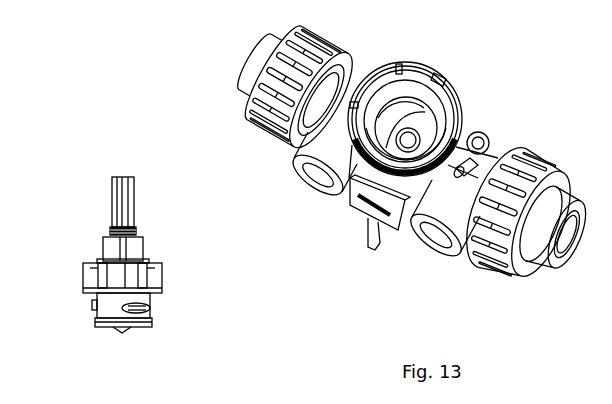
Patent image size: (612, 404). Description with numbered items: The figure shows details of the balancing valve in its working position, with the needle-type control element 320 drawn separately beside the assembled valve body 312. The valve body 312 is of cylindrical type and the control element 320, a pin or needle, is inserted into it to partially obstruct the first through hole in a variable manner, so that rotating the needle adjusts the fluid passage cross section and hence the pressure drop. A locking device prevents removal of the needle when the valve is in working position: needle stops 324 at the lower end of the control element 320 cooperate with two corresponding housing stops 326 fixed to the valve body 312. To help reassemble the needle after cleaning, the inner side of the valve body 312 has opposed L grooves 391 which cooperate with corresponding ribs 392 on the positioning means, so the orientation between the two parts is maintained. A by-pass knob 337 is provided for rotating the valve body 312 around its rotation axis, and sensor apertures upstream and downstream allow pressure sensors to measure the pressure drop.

The control element 320 is at (118, 190).
The ribs 392 is at (156, 277).
The needle stops 324 is at (148, 308).
The housing stops 326 is at (380, 103).
The L grooves 391 is at (412, 77).
The valve body 312 is at (463, 90).
The by-pass knob 337 is at (372, 245).